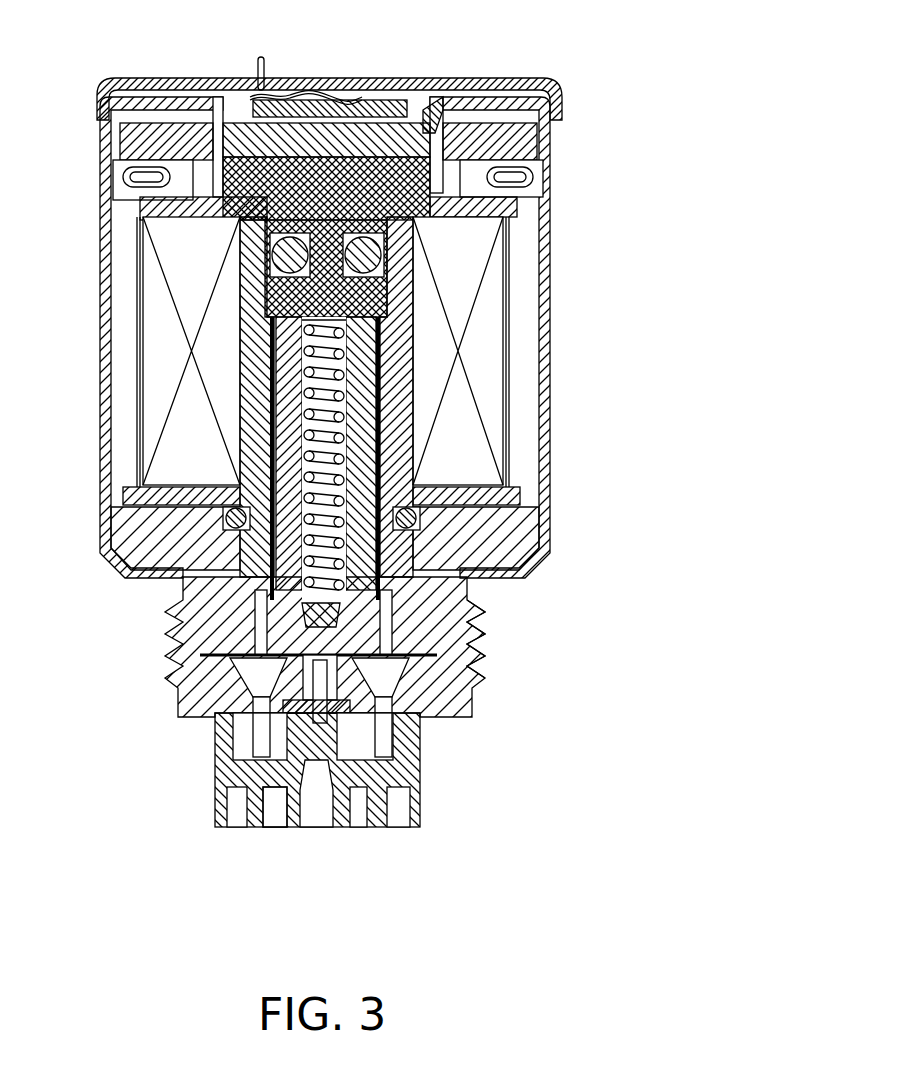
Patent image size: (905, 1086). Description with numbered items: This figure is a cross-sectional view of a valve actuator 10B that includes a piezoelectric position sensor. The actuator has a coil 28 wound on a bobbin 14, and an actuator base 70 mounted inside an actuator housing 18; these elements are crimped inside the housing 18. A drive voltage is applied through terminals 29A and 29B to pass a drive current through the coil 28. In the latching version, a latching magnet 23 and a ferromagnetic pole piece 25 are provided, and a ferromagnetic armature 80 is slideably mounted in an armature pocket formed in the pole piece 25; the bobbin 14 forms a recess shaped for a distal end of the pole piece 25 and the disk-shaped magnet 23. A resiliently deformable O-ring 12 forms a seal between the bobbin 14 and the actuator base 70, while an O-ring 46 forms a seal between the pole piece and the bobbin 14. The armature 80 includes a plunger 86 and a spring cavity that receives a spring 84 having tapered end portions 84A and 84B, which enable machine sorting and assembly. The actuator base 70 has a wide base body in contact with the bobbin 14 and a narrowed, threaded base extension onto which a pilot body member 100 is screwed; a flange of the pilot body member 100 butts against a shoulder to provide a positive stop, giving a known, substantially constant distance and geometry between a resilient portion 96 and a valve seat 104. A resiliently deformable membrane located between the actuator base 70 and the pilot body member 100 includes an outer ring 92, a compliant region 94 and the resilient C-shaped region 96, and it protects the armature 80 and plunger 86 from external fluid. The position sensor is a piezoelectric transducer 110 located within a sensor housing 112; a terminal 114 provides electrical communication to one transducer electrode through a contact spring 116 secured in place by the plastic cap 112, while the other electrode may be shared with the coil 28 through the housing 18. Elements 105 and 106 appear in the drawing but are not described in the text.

The valve actuator 10B is at (145, 848).
The O-ring 12 is at (425, 527).
The bobbin 14 is at (145, 151).
The actuator housing 18 is at (548, 320).
The latching magnet 23 is at (517, 84).
The ferromagnetic pole piece 25 is at (445, 93).
The coil 28 is at (163, 362).
The terminal 29A is at (125, 192).
The terminal 29B is at (535, 176).
The O-ring 46 is at (380, 257).
The actuator base 70 is at (185, 665).
The ferromagnetic armature 80 is at (403, 358).
The spring 84 is at (348, 410).
The tapered end portion 84A is at (390, 333).
The tapered end portion 84B is at (320, 612).
The plunger 86 is at (355, 712).
The outer ring 92 is at (468, 626).
The compliant region 94 is at (218, 730).
The resilient C-shaped region 96 is at (217, 760).
The pilot body member 100 is at (400, 780).
The valve seat 104 is at (350, 723).
The first port 105 is at (262, 830).
The second port 106 is at (320, 830).
The piezoelectric transducer 110 is at (402, 160).
The sensor housing 112 is at (355, 100).
The terminal 114 is at (265, 62).
The contact spring 116 is at (322, 94).